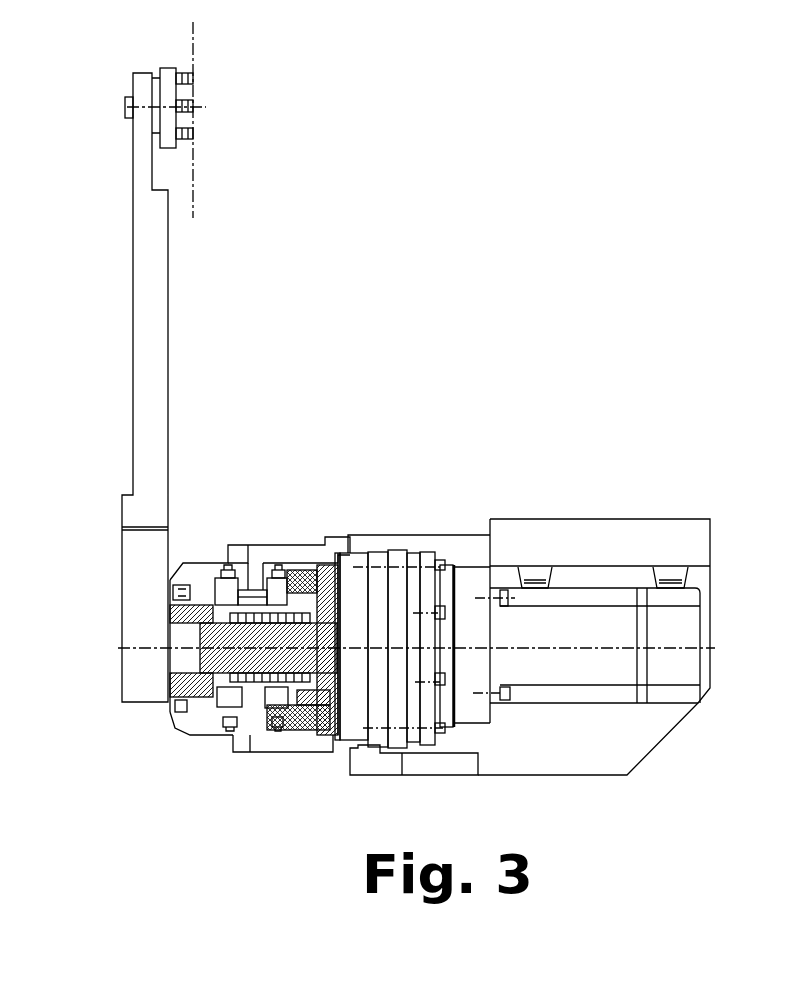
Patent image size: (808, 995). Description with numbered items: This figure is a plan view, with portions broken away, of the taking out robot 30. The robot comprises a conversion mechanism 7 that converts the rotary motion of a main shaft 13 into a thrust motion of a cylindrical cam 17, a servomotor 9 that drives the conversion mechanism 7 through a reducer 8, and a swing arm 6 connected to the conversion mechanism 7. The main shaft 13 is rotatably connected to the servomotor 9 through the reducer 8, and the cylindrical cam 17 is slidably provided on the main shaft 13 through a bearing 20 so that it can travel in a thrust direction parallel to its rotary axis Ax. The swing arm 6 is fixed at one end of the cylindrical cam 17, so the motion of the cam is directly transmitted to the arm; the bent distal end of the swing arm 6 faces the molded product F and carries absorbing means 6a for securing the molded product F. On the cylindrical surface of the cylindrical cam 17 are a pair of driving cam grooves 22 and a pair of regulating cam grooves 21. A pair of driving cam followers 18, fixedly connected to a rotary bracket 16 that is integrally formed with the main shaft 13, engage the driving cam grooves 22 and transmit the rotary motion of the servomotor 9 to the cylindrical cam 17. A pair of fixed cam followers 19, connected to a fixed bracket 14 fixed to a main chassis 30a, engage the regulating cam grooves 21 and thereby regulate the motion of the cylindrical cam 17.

The swing arm 6 is at (157, 332).
The absorbing means 6a is at (182, 150).
The molded product F is at (193, 65).
The taking out robot 30 is at (426, 362).
The main chassis 30a is at (457, 535).
The conversion mechanism 7 is at (441, 436).
The reducer 8 is at (390, 548).
The servomotor 9 is at (577, 625).
The main shaft 13 is at (345, 752).
The fixed bracket 14 is at (307, 740).
The rotary bracket 16 is at (293, 710).
The cylindrical cam 17 is at (192, 688).
The driving cam followers 18 is at (297, 577).
The fixed cam followers 19 is at (205, 572).
The bearing 20 is at (252, 672).
The regulating cam grooves 21 is at (238, 577).
The driving cam grooves 22 is at (318, 577).
The rotary axis Ax is at (436, 648).